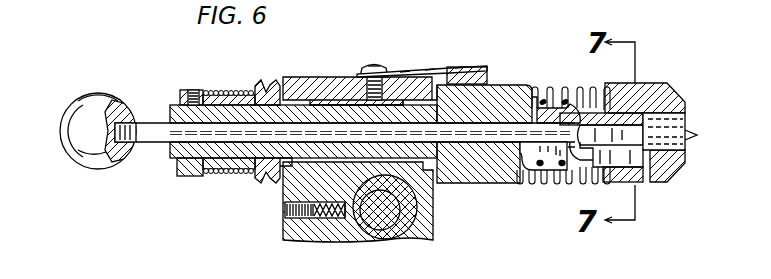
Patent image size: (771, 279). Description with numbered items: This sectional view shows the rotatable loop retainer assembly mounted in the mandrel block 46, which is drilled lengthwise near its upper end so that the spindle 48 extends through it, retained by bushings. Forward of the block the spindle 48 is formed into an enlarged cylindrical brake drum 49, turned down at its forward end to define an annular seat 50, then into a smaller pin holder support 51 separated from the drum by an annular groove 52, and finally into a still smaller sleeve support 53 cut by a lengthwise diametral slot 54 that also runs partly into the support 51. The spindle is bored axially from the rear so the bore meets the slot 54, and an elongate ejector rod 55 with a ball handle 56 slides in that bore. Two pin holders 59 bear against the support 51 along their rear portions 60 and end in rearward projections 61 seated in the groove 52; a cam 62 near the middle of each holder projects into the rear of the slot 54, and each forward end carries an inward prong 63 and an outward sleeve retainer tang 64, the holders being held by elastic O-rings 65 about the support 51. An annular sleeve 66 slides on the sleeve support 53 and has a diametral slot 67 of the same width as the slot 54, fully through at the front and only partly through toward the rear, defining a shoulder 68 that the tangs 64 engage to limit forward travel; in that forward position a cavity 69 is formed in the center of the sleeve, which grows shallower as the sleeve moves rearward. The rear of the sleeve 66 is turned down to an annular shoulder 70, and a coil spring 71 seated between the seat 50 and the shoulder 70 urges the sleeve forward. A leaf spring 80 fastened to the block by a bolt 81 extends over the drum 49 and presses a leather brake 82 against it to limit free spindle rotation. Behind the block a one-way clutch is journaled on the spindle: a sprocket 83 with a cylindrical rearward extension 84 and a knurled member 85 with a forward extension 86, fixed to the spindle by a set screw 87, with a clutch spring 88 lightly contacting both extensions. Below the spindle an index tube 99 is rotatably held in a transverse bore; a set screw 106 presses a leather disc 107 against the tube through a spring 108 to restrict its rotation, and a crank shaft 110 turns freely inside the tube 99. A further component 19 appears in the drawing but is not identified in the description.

The conduit 19 is at (698, 135).
The mandrel block 46 is at (422, 199).
The spindle 48 is at (337, 118).
The brake drum 49 is at (480, 170).
The annular seat 50 is at (522, 88).
The pin holder support 51 is at (544, 129).
The annular groove 52 is at (530, 108).
The sleeve support 53 is at (638, 95).
The lengthwise slot 54 is at (623, 180).
The ejector rod 55 is at (498, 147).
The ball handle 56 is at (70, 113).
The pin holders 59 is at (588, 182).
The rear portions 60 is at (547, 180).
The rearward projections 61 is at (530, 152).
The cam 62 is at (586, 141).
The prong 63 is at (670, 165).
The sleeve retainer tang 64 is at (645, 183).
The O-rings 65 is at (548, 100).
The annular sleeve 66 is at (670, 92).
The diametral slot 67 is at (680, 160).
The shoulder 68 is at (637, 187).
The cavity 69 is at (672, 118).
The annular shoulder 70 is at (605, 84).
The coil spring 71 is at (555, 183).
The leaf spring 80 is at (437, 69).
The bolt 81 is at (370, 66).
The brake 82 is at (460, 78).
The sprocket 83 is at (258, 80).
The cylindrical rearward extension 84 is at (245, 174).
The knurled member 85 is at (180, 170).
The forward extension 86 is at (213, 172).
The set screw 87 is at (190, 91).
The clutch spring 88 is at (233, 91).
The index tube 99 is at (408, 222).
The set screw 106 is at (285, 210).
The leather disc 107 is at (341, 218).
The spring 108 is at (320, 218).
The crank shaft 110 is at (380, 217).